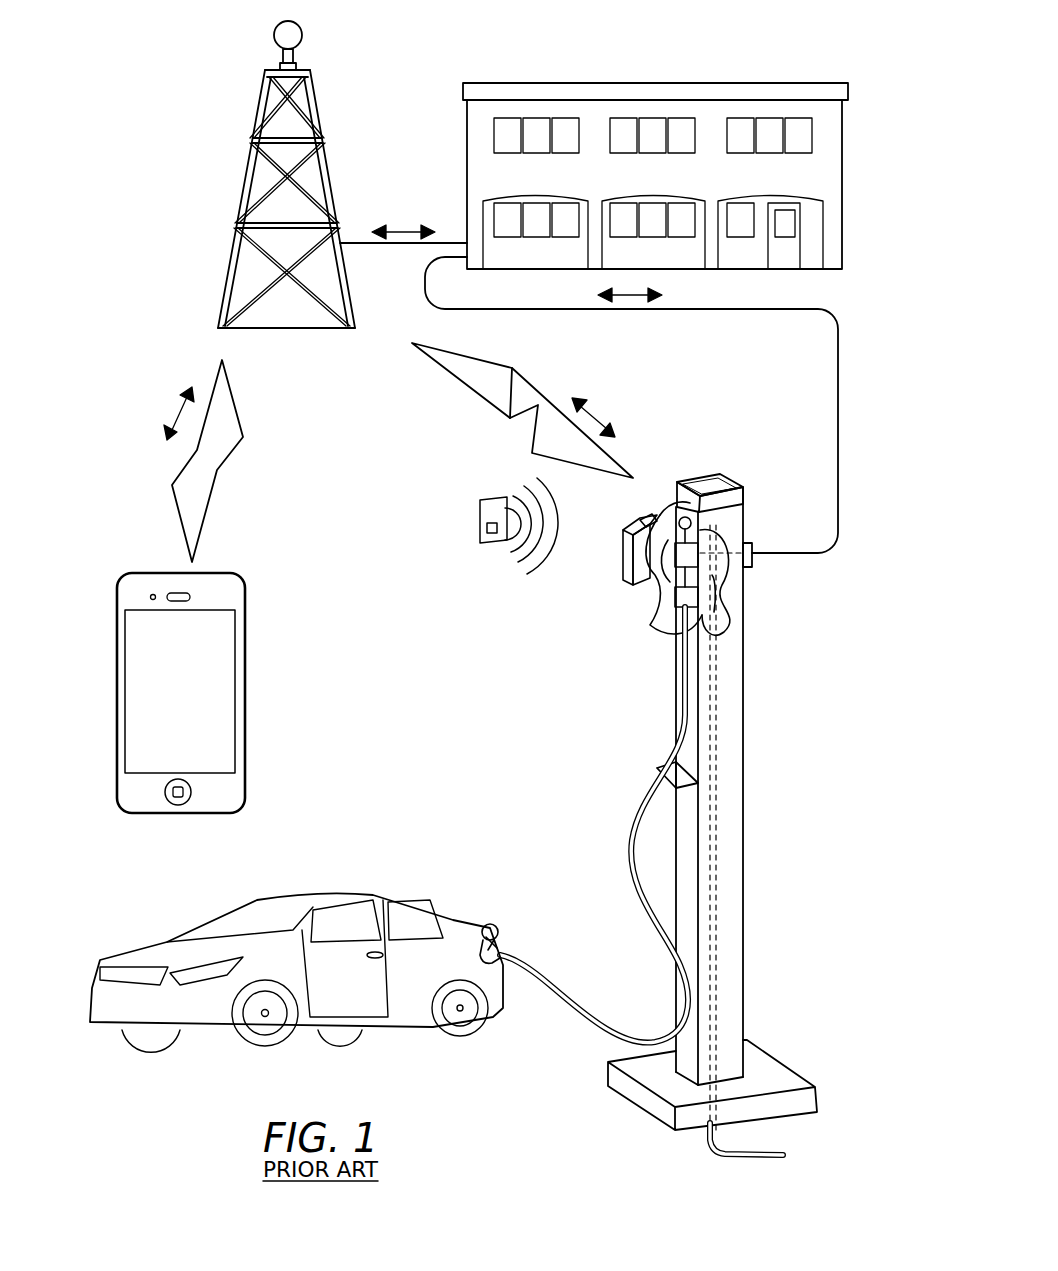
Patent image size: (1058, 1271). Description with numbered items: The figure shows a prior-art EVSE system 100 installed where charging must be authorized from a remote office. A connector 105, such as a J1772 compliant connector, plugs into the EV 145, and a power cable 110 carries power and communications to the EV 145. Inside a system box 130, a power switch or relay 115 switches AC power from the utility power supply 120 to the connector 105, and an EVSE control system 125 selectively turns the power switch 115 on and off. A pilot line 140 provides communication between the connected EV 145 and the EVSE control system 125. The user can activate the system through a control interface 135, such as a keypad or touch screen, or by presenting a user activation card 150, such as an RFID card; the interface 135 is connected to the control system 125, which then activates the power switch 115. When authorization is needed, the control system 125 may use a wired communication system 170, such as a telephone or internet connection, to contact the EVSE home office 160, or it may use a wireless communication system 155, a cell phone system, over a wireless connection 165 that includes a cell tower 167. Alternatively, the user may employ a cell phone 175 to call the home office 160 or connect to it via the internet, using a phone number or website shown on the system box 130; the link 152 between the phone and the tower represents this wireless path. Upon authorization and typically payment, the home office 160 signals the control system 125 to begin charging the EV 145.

The EVSE system 100 is at (795, 656).
The connector 105 is at (500, 932).
The power cable 110 is at (632, 840).
The power switch or relay 115 is at (680, 598).
The utility power supply 120 is at (716, 873).
The EVSE control system 125 is at (698, 550).
The system box 130 is at (589, 545).
The control interface 135 is at (642, 523).
The pilot line 140 is at (675, 597).
The EV 145 is at (372, 893).
The user activation card 150 is at (480, 518).
The wireless communication link to mobile device 152 is at (225, 455).
The wireless communication system 155 is at (680, 516).
The EVSE home office 160 is at (706, 83).
The wireless connection 165 is at (528, 383).
The cell tower 167 is at (318, 104).
The wired communication system 170 is at (836, 396).
The cell phone 175 is at (245, 670).